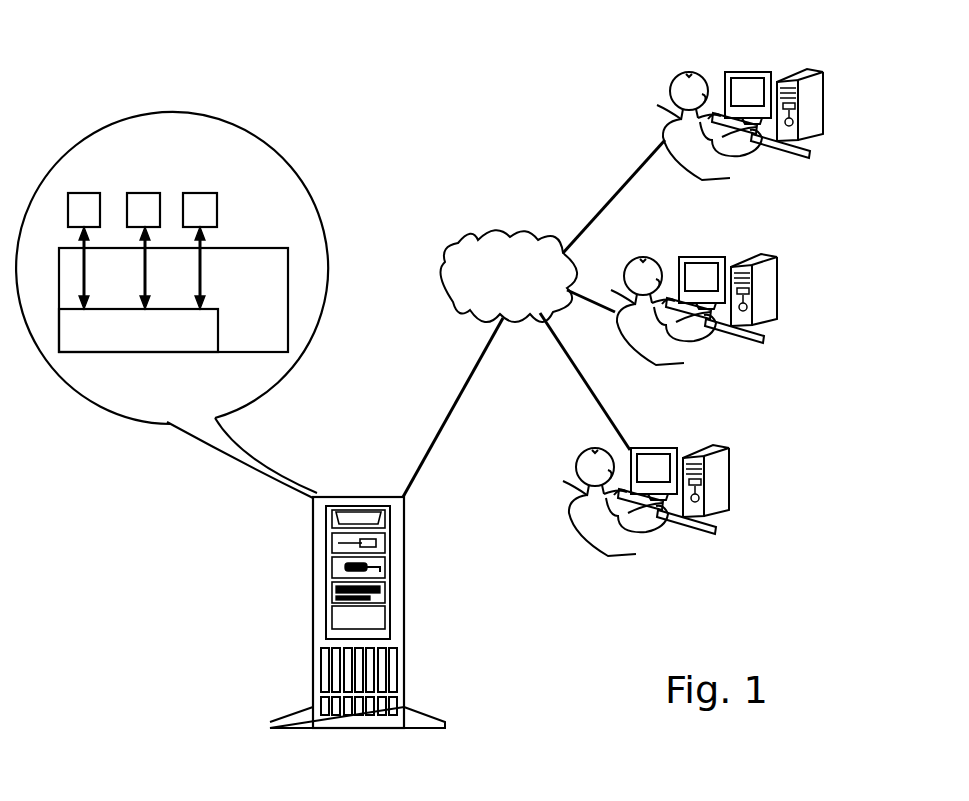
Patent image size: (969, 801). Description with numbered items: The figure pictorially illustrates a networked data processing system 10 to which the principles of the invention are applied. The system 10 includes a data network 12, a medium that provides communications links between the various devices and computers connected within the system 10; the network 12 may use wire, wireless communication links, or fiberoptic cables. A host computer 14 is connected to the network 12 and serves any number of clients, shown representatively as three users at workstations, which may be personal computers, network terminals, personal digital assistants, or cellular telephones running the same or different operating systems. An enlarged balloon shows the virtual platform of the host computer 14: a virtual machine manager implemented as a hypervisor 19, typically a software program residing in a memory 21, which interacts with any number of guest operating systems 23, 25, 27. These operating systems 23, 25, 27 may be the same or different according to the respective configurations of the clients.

The networked data processing system 10 is at (527, 144).
The data network 12 is at (480, 234).
The host computer 14 is at (404, 559).
The hypervisor 19 is at (218, 335).
The memory 21 is at (240, 248).
The guest operating system 23 is at (85, 193).
The guest operating system 25 is at (144, 193).
The guest operating system 27 is at (200, 193).